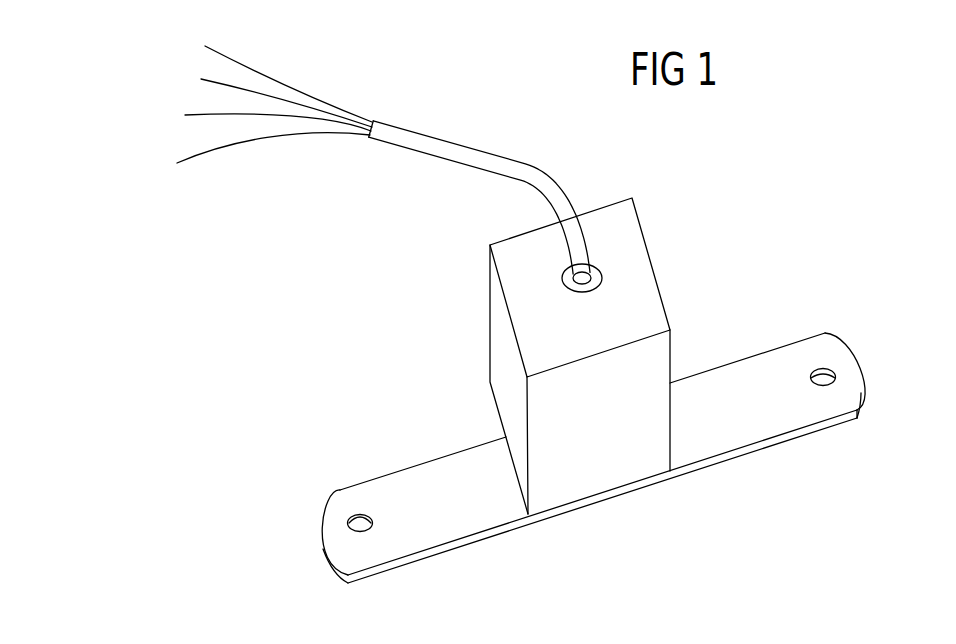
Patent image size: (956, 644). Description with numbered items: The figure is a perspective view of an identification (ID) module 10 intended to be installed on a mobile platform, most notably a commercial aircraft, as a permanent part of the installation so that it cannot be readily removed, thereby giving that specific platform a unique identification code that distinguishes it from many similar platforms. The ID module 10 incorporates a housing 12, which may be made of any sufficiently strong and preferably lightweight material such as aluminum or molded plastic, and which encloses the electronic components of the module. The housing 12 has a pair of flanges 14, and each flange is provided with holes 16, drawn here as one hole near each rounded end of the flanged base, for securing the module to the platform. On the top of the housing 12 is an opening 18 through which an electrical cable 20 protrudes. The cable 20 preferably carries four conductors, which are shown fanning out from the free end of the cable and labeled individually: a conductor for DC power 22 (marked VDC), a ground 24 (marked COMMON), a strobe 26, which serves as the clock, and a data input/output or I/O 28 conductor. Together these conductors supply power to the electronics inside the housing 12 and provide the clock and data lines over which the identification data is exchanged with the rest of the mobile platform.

The identification (ID) module 10 is at (457, 295).
The housing 12 is at (500, 311).
The flanges 14 is at (770, 417).
The holes 16 is at (355, 515).
The opening 18 is at (602, 273).
The electrical cable 20 is at (480, 140).
The DC power conductor 22 is at (233, 62).
The ground conductor 24 is at (200, 81).
The strobe conductor 26 is at (187, 116).
The data input/output (I/O) conductor 28 is at (182, 160).